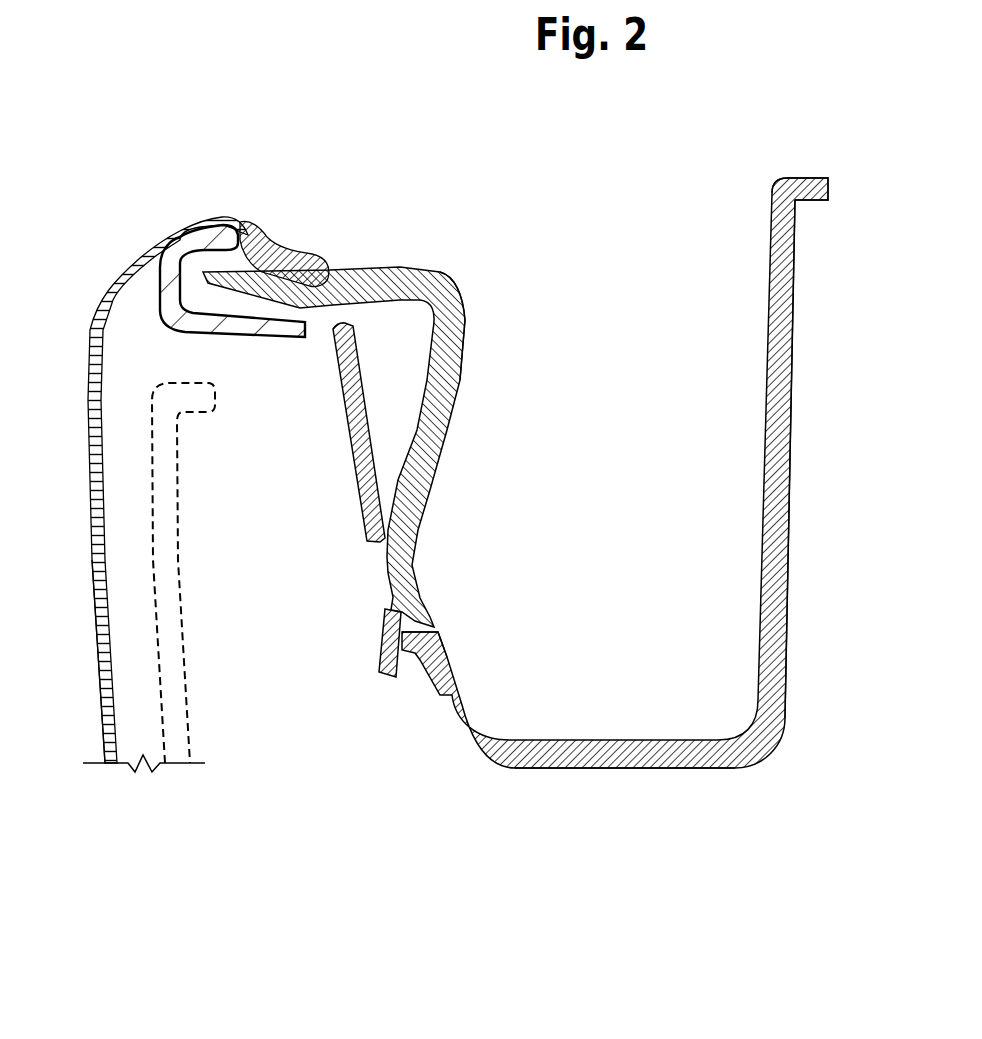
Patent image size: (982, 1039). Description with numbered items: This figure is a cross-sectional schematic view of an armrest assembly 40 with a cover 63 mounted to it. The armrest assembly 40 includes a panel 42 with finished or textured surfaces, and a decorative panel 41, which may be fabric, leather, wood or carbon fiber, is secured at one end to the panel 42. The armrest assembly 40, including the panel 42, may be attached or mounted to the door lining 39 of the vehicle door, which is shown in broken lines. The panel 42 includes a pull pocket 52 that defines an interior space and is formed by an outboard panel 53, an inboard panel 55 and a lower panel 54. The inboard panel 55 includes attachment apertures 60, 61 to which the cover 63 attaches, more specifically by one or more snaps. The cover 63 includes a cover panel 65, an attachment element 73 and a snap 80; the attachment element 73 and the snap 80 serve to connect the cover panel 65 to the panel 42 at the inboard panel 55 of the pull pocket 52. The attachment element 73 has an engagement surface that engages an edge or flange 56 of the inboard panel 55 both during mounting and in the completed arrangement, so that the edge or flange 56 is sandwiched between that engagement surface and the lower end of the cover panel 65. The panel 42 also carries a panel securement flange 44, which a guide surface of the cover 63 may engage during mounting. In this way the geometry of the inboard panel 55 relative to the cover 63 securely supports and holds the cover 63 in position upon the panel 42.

The door lining 39 is at (175, 752).
The armrest assembly 40 is at (158, 210).
The decorative panel 41 is at (100, 662).
The panel 42 is at (255, 214).
The panel securement flange 44 is at (255, 337).
The pull pocket 52 is at (608, 512).
The outboard panel 53 is at (782, 580).
The lower panel 54 is at (660, 760).
The inboard panel 55 is at (348, 461).
The edge or flange 56 is at (442, 648).
The attachment aperture 60 is at (370, 582).
The attachment aperture 61 is at (318, 325).
The cover 63 is at (432, 268).
The cover panel 65 is at (465, 331).
The attachment element 73 is at (383, 676).
The snap 80 is at (277, 234).